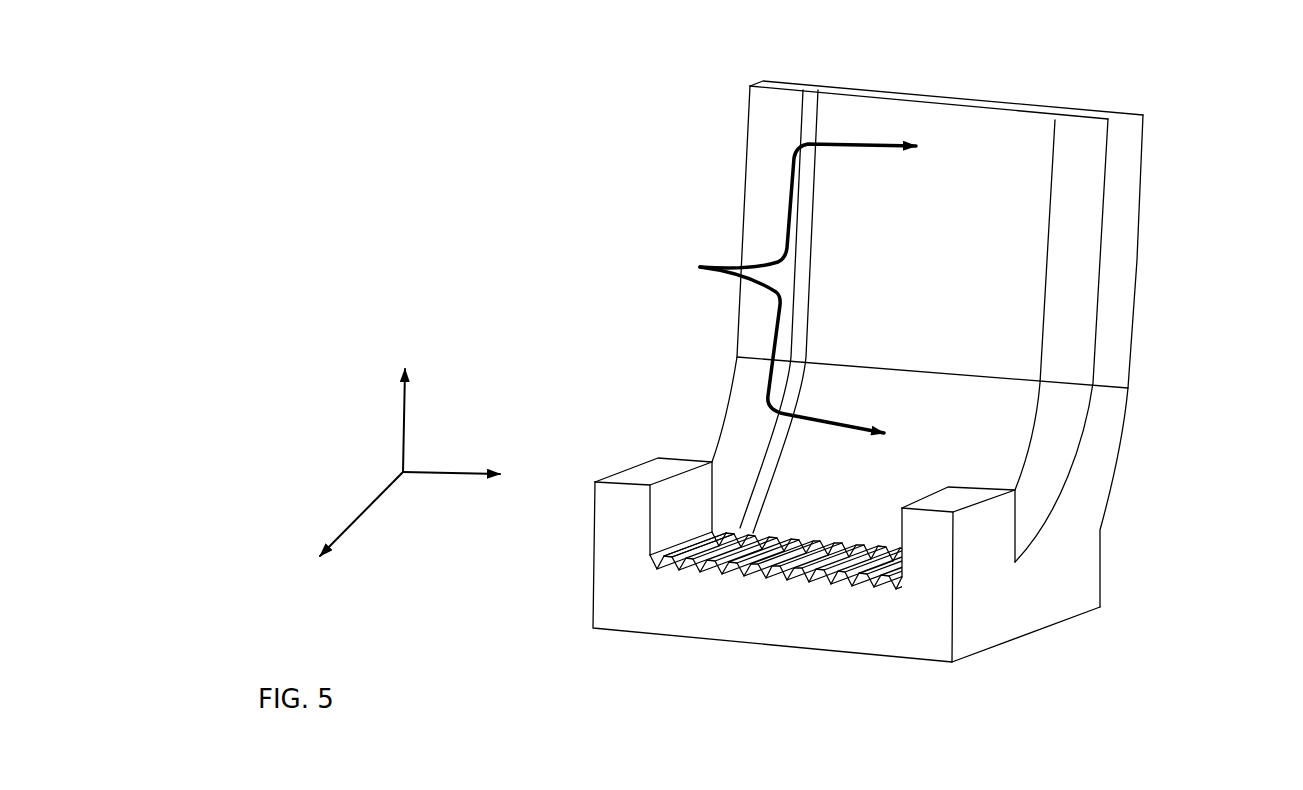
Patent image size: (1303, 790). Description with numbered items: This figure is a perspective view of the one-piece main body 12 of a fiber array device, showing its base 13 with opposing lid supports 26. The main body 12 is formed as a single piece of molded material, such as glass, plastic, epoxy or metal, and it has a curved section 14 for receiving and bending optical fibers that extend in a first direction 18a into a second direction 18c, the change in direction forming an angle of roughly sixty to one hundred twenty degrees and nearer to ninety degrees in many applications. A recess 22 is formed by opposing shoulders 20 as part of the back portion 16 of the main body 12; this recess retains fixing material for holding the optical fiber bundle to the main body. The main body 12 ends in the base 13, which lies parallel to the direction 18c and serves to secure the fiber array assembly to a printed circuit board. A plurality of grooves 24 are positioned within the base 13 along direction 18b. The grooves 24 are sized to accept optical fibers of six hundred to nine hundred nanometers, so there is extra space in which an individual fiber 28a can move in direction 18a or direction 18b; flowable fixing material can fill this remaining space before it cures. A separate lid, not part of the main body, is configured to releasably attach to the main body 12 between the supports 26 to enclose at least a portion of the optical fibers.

The main body 12 is at (1140, 340).
The base 13 is at (1008, 615).
The curved section 14 is at (700, 267).
The back portion 16 is at (1150, 152).
The first direction 18a is at (406, 400).
The direction 18b is at (486, 478).
The second direction 18c is at (357, 548).
The shoulders 20 is at (812, 97).
The recess 22 is at (984, 137).
The grooves 24 is at (903, 594).
The supports 26 is at (630, 519).
The individual fiber 28a is at (707, 542).